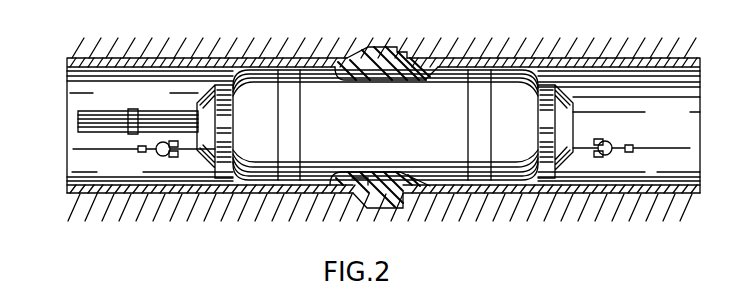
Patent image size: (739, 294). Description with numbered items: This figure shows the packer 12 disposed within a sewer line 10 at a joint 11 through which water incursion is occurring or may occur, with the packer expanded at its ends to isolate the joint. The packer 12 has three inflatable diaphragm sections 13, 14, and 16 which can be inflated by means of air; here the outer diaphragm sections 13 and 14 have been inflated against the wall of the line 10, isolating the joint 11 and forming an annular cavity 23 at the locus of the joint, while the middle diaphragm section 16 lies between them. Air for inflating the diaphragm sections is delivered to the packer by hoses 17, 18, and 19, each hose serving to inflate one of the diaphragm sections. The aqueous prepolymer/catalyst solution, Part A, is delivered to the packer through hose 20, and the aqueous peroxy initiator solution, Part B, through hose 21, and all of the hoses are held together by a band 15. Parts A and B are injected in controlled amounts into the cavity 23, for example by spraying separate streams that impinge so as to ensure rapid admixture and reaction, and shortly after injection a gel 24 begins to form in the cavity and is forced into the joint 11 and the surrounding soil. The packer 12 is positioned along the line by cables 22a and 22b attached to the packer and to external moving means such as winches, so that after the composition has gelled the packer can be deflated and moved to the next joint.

The sewer line 10 is at (392, 70).
The joint 11 is at (405, 60).
The packer 12 is at (326, 166).
The inflatable diaphragm section 13 is at (260, 57).
The inflatable diaphragm section 14 is at (524, 70).
The band 15 is at (138, 109).
The inflatable diaphragm section 16 is at (388, 134).
The hose 17 is at (114, 116).
The hose 18 is at (79, 116).
The hose 19 is at (79, 120).
The hose 20 is at (79, 124).
The hose 21 is at (70, 146).
The cable 22a is at (106, 150).
The cable 22b is at (660, 146).
The annular cavity 23 is at (430, 66).
The gel 24 is at (407, 81).